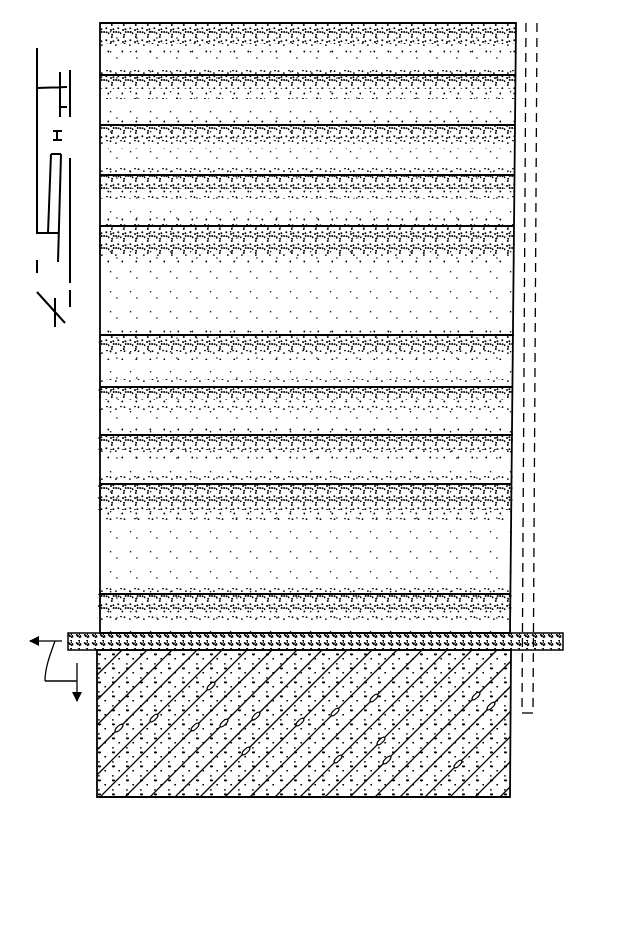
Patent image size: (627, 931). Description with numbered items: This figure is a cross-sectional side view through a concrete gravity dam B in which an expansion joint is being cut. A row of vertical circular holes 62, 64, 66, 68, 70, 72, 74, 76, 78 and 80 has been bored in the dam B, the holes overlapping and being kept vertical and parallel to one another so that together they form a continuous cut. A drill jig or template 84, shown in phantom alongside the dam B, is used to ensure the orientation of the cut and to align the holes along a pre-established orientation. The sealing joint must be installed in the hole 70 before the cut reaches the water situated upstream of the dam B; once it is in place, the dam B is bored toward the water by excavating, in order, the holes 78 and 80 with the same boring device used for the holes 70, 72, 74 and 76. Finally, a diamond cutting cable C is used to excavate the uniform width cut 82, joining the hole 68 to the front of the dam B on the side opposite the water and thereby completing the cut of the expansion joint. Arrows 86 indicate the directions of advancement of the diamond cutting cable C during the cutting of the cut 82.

The vertical circular hole 80 is at (143, 53).
The vertical circular hole 78 is at (140, 100).
The vertical circular hole 76 is at (572, 163).
The vertical circular hole 62 is at (555, 212).
The vertical circular hole 70 is at (553, 287).
The vertical circular hole 64 is at (127, 362).
The vertical circular hole 72 is at (120, 407).
The vertical circular hole 66 is at (127, 457).
The vertical circular hole 74 is at (122, 545).
The vertical circular hole 68 is at (143, 612).
The uniform width cut 82 is at (100, 628).
The drill jig or template 84 is at (563, 732).
The arrows 86 is at (48, 681).
The gravity dam B is at (583, 805).
The diamond cutting cable C is at (597, 680).